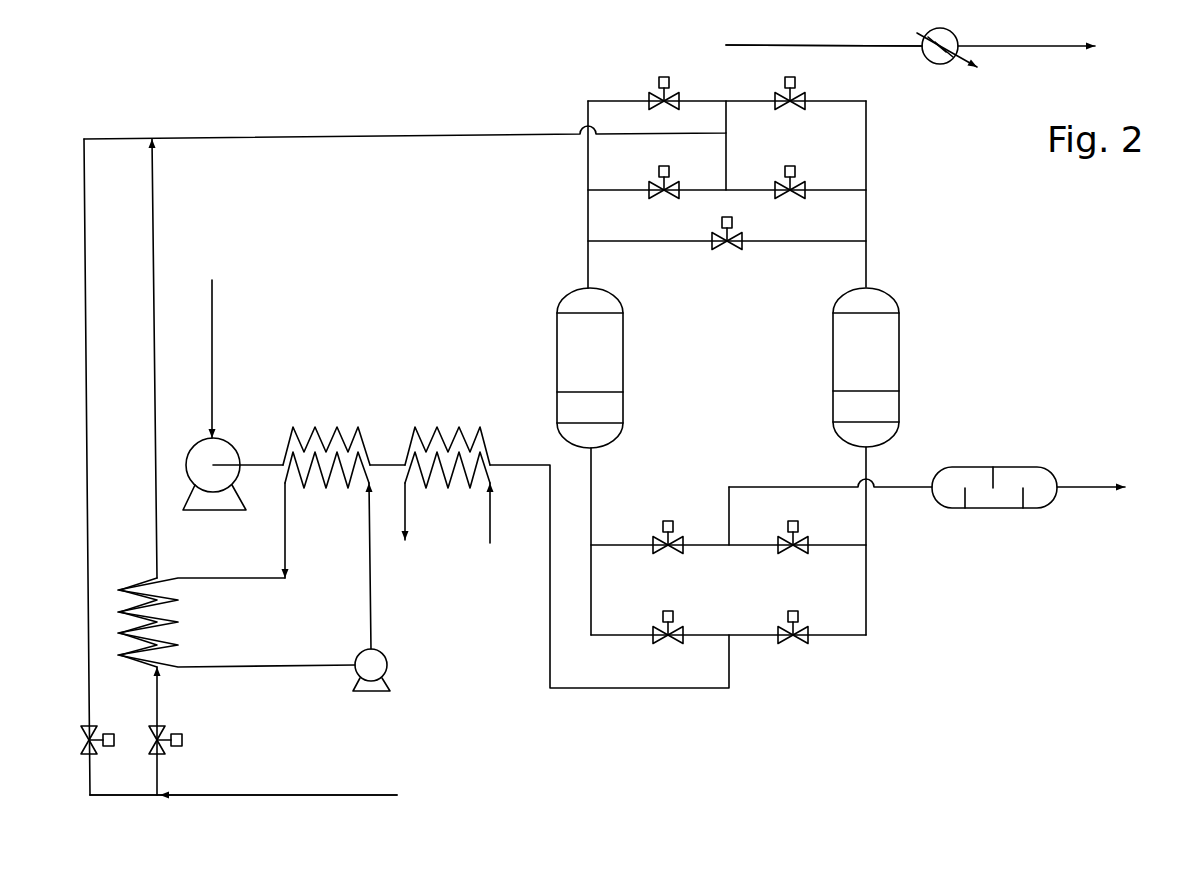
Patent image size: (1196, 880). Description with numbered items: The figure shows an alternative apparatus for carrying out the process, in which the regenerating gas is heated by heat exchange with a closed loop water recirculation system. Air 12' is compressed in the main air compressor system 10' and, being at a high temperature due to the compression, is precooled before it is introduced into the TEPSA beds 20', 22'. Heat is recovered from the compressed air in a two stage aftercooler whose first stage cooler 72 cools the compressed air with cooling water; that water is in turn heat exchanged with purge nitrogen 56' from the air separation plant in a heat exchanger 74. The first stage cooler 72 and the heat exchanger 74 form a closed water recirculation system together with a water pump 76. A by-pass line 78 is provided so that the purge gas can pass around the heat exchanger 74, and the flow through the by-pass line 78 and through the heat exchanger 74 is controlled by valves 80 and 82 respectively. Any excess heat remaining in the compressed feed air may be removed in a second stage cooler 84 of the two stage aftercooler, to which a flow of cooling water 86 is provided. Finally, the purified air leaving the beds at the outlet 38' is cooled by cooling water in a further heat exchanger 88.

The main air compressor system 10' is at (232, 464).
The air 12' is at (241, 359).
The TEPSA bed 20' is at (626, 368).
The TEPSA bed 22' is at (906, 367).
The outlet 38' is at (824, 61).
The purge nitrogen 56' is at (243, 778).
The first stage cooler 72 is at (338, 433).
The heat exchanger 74 is at (173, 640).
The water pump 76 is at (385, 652).
The by-pass line 78 is at (87, 503).
The valve 80 is at (93, 727).
The valve 82 is at (160, 727).
The second stage cooler 84 is at (433, 433).
The cooling water 86 is at (490, 523).
The heat exchanger 88 is at (932, 63).